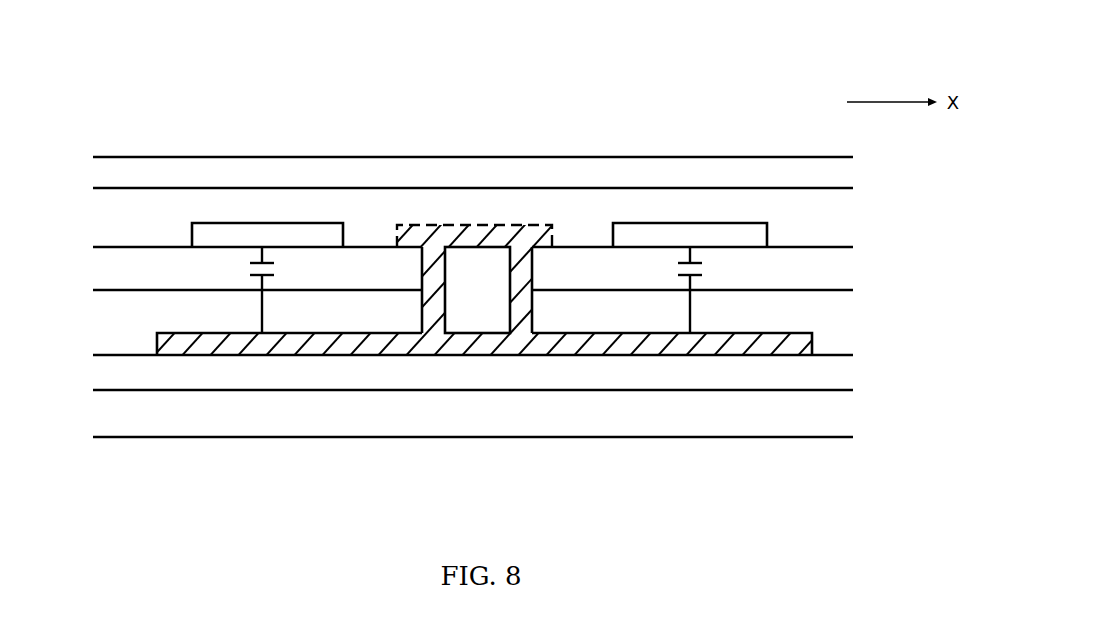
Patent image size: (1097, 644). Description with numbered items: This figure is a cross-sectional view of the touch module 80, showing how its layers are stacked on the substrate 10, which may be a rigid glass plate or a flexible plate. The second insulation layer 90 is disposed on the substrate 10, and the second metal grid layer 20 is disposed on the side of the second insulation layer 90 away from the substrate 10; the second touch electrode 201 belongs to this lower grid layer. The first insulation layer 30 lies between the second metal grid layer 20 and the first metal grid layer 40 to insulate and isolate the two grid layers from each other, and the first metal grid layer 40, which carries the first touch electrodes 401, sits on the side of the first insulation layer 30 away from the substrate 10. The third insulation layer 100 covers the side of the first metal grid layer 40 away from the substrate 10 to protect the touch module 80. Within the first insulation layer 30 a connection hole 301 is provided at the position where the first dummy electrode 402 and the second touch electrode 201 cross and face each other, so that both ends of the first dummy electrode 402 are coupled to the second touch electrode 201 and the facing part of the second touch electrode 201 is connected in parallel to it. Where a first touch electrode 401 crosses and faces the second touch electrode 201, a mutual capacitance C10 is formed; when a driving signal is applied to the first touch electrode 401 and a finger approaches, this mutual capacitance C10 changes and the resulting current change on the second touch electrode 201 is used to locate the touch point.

The touch module 80 is at (153, 74).
The third insulation layer 100 is at (835, 172).
The first metal grid layer 40 is at (818, 215).
The first insulation layer 30 is at (827, 277).
The second metal grid layer 20 is at (535, 371).
The second touch electrode 201 is at (257, 340).
The second insulation layer 90 is at (823, 375).
The substrate 10 is at (818, 418).
The first touch electrode 401 is at (262, 240).
The first dummy electrode 402 is at (462, 237).
The connection hole 301 is at (533, 273).
The mutual capacitance C10 is at (496, 290).